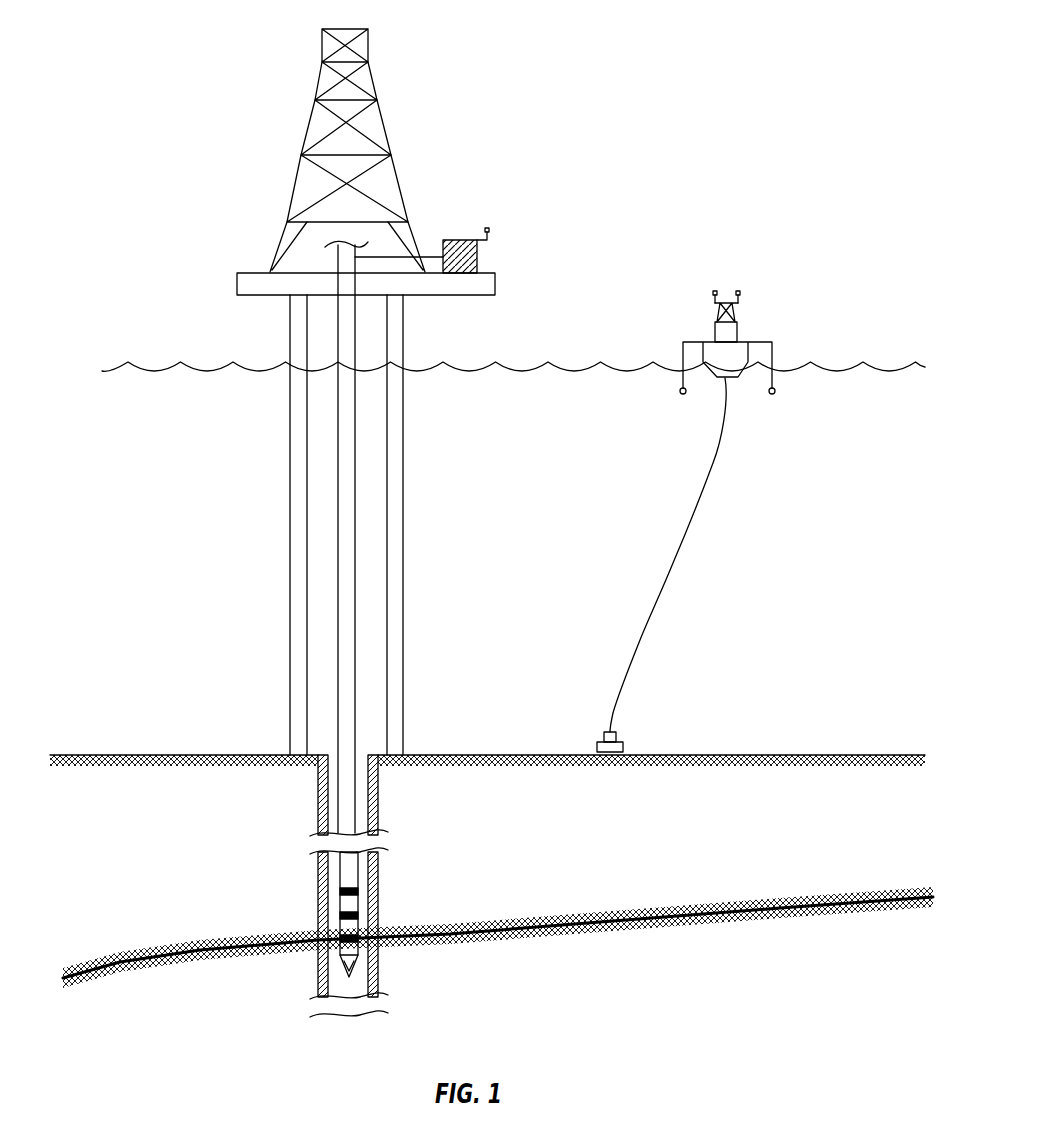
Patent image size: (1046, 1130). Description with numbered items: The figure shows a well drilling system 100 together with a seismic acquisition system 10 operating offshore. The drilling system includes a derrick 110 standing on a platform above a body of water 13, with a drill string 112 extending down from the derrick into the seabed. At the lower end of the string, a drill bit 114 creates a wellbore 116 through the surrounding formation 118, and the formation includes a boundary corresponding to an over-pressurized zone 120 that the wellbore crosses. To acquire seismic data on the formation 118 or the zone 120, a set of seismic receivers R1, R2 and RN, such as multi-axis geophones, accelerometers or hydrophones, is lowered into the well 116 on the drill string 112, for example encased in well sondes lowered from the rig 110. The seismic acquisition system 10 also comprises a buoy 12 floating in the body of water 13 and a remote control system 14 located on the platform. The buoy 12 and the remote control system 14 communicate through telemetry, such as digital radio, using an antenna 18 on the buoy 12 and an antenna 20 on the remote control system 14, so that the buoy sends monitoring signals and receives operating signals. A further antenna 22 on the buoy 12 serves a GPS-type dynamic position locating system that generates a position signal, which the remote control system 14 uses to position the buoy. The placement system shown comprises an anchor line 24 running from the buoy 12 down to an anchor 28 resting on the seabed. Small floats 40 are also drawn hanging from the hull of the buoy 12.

The well drilling system 100 is at (626, 54).
The derrick 110 is at (377, 80).
The remote control system 14 is at (487, 190).
The antenna 20 is at (489, 230).
The drill string 112 is at (355, 347).
The body of water 13 is at (829, 549).
The seismic acquisition system 10 is at (640, 225).
The buoy 12 is at (738, 332).
The antenna 22 is at (713, 293).
The antenna 18 is at (740, 293).
The floats / stabilizers 40 is at (680, 391).
The anchor line 24 is at (658, 590).
The anchor 28 is at (623, 742).
The formation 118 is at (672, 853).
The over-pressurized zone 120 is at (722, 971).
The wellbore 116 is at (368, 890).
The drill bit 114 is at (350, 973).
The seismic receiver R1 is at (333, 897).
The seismic receiver R2 is at (333, 917).
The seismic receiver RN is at (333, 947).